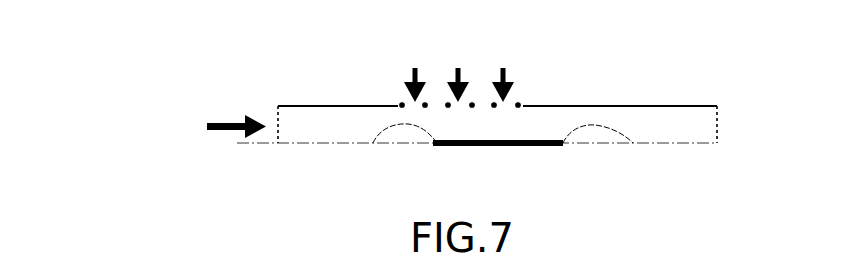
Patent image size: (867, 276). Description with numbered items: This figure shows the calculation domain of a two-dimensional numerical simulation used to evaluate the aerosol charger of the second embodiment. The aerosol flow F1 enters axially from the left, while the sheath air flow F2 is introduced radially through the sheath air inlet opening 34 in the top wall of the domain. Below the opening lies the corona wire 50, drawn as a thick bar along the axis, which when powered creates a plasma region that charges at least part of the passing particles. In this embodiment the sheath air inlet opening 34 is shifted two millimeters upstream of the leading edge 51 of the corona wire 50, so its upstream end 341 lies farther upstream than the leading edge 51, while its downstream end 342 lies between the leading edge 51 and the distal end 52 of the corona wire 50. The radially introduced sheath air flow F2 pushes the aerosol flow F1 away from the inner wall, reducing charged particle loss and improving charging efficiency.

The sheath air inlet opening 34 is at (517, 113).
The upstream end 341 is at (400, 104).
The downstream end 342 is at (524, 104).
The corona wire 50 is at (527, 146).
The leading edge 51 is at (378, 150).
The distal end 52 is at (633, 143).
The aerosol flow F1 is at (235, 121).
The sheath air flow F2 is at (453, 78).